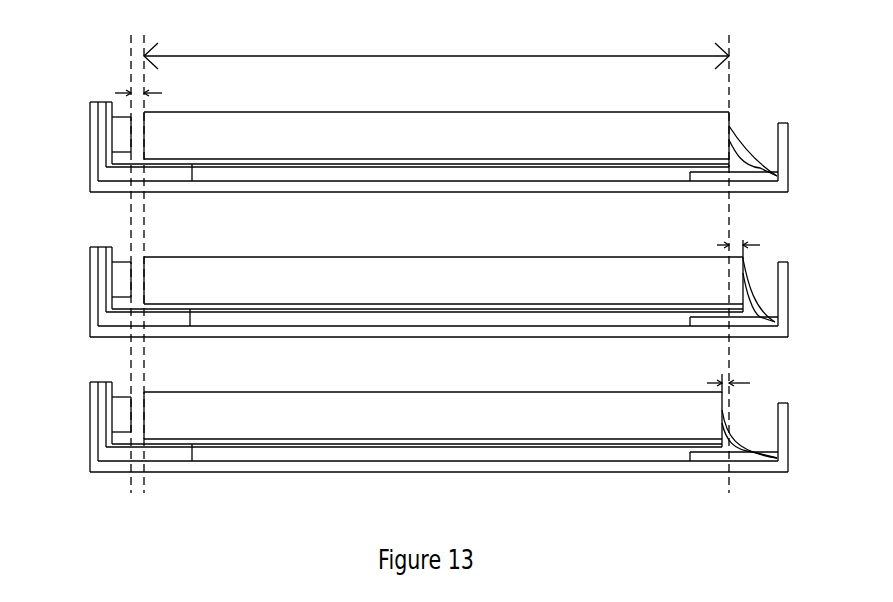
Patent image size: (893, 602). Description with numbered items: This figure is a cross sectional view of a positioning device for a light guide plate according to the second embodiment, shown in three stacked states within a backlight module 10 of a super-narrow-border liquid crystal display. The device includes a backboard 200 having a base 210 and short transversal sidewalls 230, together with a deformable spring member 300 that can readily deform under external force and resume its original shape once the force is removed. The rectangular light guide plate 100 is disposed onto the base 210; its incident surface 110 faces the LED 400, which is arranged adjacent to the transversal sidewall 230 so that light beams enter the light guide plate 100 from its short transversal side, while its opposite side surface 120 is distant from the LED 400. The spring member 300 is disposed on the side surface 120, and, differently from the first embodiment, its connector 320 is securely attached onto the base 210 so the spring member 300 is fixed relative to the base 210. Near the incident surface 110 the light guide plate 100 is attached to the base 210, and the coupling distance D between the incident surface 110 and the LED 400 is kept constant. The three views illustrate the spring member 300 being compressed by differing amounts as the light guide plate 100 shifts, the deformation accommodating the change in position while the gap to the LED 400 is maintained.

The backlight module 10 is at (118, 78).
The light guide plate 100 is at (410, 112).
The incident surface 110 is at (143, 278).
The side surface 120 is at (729, 130).
The backboard 200 is at (90, 472).
The base 210 is at (438, 192).
The transversal sidewall 230 is at (90, 427).
The spring member 300 is at (743, 153).
The connector 320 is at (697, 177).
The LED 400 is at (118, 279).